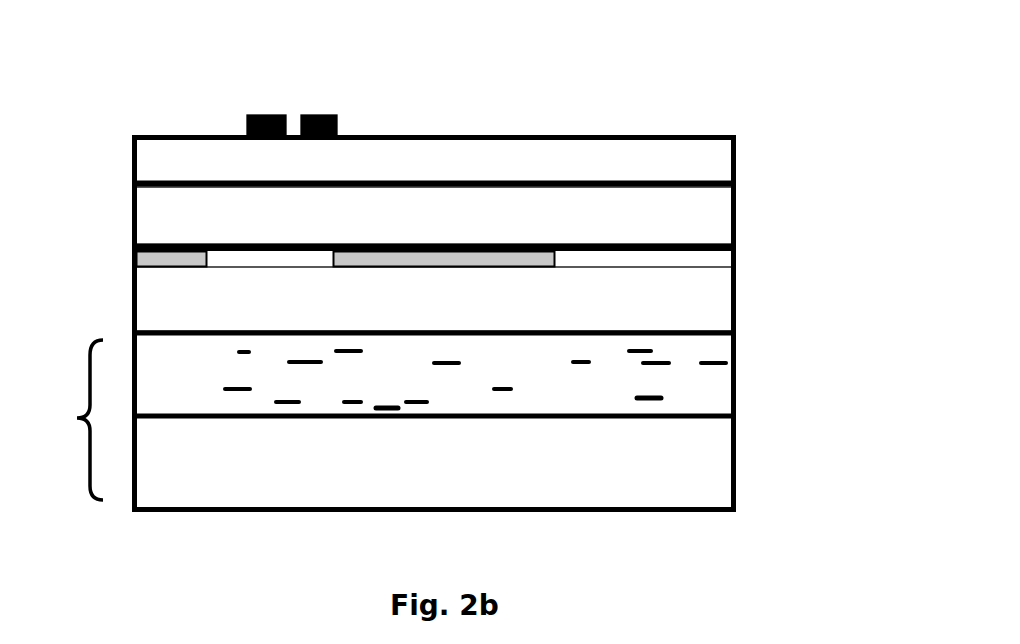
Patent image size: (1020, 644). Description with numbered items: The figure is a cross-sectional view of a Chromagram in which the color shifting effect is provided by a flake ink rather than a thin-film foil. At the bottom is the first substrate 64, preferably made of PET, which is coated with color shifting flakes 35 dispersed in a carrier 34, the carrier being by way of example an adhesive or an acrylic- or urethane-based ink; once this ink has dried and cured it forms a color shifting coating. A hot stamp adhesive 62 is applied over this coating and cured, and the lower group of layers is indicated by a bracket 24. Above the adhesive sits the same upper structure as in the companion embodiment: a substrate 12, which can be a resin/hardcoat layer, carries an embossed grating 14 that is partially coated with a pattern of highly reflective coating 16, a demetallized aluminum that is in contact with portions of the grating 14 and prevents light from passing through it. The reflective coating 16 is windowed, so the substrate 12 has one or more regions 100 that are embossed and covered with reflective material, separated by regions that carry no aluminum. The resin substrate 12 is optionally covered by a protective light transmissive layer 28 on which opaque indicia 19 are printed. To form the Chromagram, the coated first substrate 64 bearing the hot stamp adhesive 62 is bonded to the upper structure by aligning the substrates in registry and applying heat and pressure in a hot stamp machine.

The substrate 12 is at (719, 225).
The grating 14 is at (230, 223).
The highly reflective coating 16 is at (572, 262).
The opaque indicia 19 is at (327, 93).
The substrate stack 24 is at (64, 420).
The protective light transmissive layer 28 is at (593, 141).
The carrier 34 is at (724, 385).
The color shifting flakes 35 is at (657, 425).
The hot stamp adhesive 62 is at (727, 302).
The first substrate 64 is at (434, 324).
The regions 100 is at (166, 228).